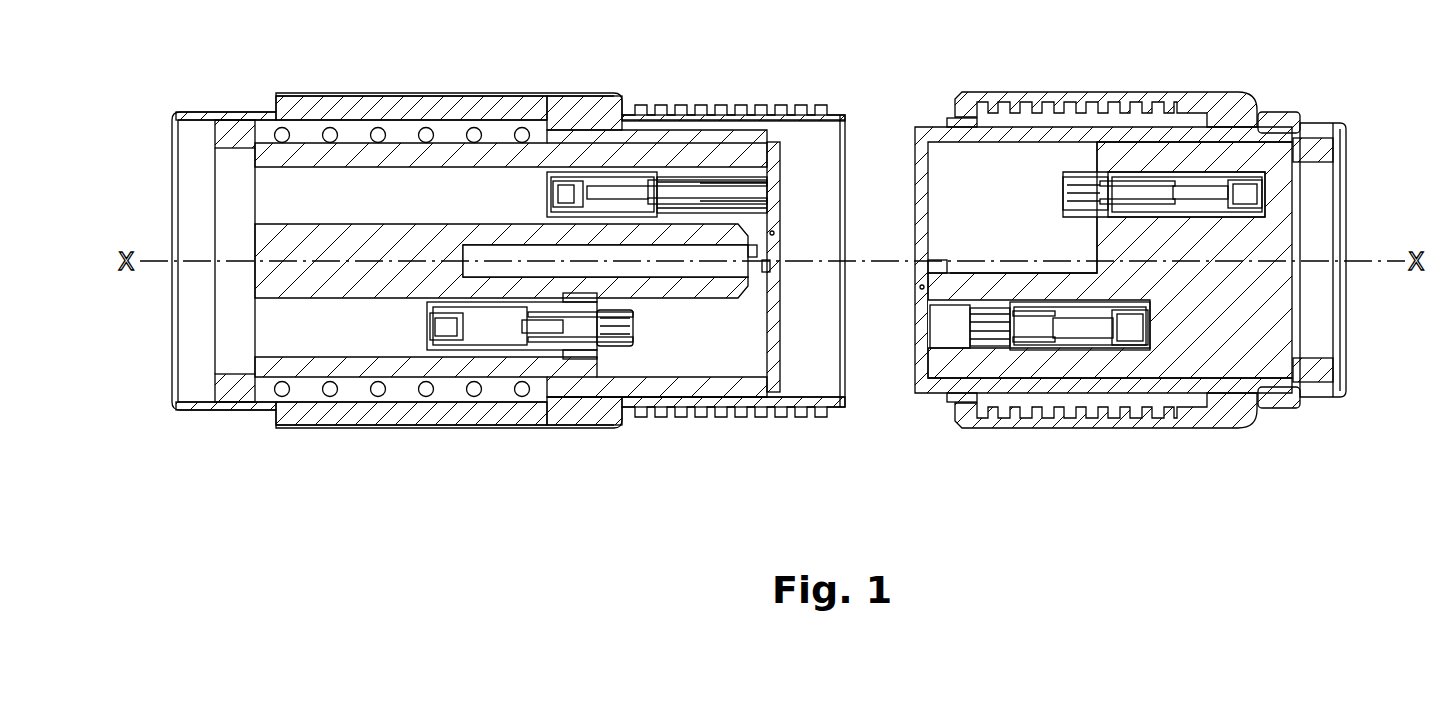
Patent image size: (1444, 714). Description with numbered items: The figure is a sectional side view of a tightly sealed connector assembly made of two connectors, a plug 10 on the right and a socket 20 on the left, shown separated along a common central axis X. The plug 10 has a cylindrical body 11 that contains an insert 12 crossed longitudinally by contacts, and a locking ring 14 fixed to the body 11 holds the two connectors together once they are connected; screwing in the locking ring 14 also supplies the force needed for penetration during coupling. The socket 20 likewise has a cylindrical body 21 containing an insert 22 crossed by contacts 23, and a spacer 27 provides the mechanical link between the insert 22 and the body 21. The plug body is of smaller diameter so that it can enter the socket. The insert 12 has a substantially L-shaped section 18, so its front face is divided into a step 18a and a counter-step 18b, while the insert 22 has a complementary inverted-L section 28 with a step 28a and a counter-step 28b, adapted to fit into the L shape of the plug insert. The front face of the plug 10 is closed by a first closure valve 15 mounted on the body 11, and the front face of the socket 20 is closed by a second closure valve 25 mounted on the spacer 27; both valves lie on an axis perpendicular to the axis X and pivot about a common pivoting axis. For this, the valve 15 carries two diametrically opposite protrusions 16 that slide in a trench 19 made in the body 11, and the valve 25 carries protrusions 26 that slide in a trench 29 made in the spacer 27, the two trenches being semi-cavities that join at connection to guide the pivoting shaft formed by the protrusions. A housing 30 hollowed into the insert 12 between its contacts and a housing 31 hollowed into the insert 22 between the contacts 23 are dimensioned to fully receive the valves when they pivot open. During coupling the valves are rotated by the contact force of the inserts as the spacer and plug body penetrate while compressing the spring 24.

The plug 10 is at (1110, 258).
The body of the plug 11 is at (1196, 400).
The insert of the plug 12 is at (1216, 237).
The locking ring 14 is at (1178, 90).
The first closure valve 15 is at (911, 357).
The protrusions of the plug closure valve 16 is at (940, 270).
The L section of the plug insert 18 is at (1118, 132).
The step of the plug insert 18a is at (1037, 258).
The counter-step of the plug insert 18b is at (1073, 258).
The trench of the plug body 19 is at (956, 264).
The socket 20 is at (540, 274).
The body of the socket 21 is at (583, 95).
The insert of the socket 22 is at (381, 240).
The contacts of the socket 23 is at (443, 178).
The spring 24 is at (383, 396).
The second closure valve 25 is at (787, 339).
The protrusions of the socket closure valve 26 is at (758, 252).
The spacer 27 is at (748, 345).
The inverted-L section of the socket insert 28 is at (587, 407).
The step of the socket insert 28a is at (745, 326).
The counter-step of the socket insert 28b is at (658, 303).
The trench of the spacer 29 is at (763, 265).
The housing of the plug insert 30 is at (1079, 260).
The housing of the socket insert 31 is at (517, 263).